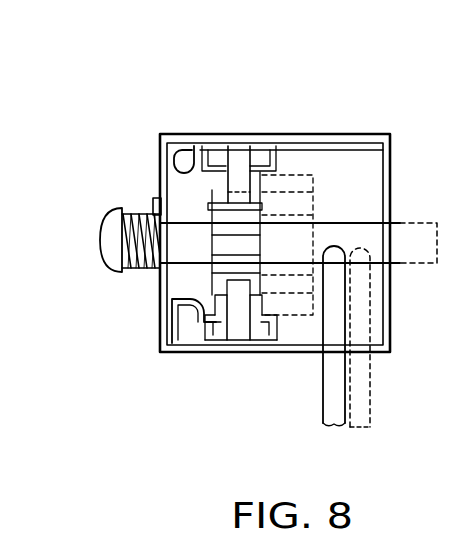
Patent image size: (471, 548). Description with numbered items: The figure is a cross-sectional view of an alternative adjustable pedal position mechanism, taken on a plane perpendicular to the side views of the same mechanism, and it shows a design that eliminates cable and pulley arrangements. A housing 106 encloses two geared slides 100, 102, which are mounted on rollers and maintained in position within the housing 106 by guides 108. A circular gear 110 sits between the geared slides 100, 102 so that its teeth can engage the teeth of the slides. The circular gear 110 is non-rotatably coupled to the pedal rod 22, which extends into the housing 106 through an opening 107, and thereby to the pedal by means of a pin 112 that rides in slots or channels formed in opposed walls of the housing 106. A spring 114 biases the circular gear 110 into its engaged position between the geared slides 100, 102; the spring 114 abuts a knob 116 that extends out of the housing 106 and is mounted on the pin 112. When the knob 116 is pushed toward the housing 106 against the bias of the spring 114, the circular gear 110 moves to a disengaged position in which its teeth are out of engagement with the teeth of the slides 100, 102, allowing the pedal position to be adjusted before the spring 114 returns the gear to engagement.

The pedal rod 22 is at (333, 393).
The geared slide 100 is at (237, 348).
The geared slide 102 is at (238, 135).
The housing 106 is at (318, 135).
The opening 107 is at (321, 356).
The guides 108 is at (188, 137).
The circular gear 110 is at (265, 197).
The pin 112 is at (330, 228).
The spring 114 is at (152, 206).
The knob 116 is at (104, 268).